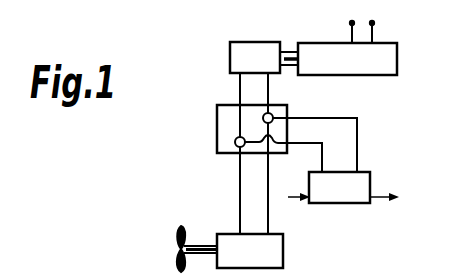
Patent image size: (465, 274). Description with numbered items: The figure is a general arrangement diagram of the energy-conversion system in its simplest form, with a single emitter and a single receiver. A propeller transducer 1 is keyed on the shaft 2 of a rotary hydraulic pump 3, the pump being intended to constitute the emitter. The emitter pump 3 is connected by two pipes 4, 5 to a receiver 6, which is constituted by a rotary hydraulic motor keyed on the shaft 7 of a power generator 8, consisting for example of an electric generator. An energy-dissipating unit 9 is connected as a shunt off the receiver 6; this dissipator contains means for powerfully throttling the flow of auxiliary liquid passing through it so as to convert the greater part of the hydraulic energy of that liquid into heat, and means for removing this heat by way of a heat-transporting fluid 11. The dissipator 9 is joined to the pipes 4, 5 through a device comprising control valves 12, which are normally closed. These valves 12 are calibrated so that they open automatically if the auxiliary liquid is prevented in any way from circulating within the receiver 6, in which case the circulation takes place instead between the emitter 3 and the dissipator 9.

The propeller transducer 1 is at (177, 228).
The shaft 2 is at (207, 243).
The rotary hydraulic pump 3 is at (284, 256).
The pipe 4 is at (237, 196).
The pipe 5 is at (270, 215).
The receiver 6 is at (246, 50).
The shaft 7 is at (293, 54).
The power generator 8 is at (386, 53).
The energy-dissipating unit 9 is at (341, 203).
The heat-transporting fluid 11 is at (378, 194).
The control valves 12 is at (210, 120).